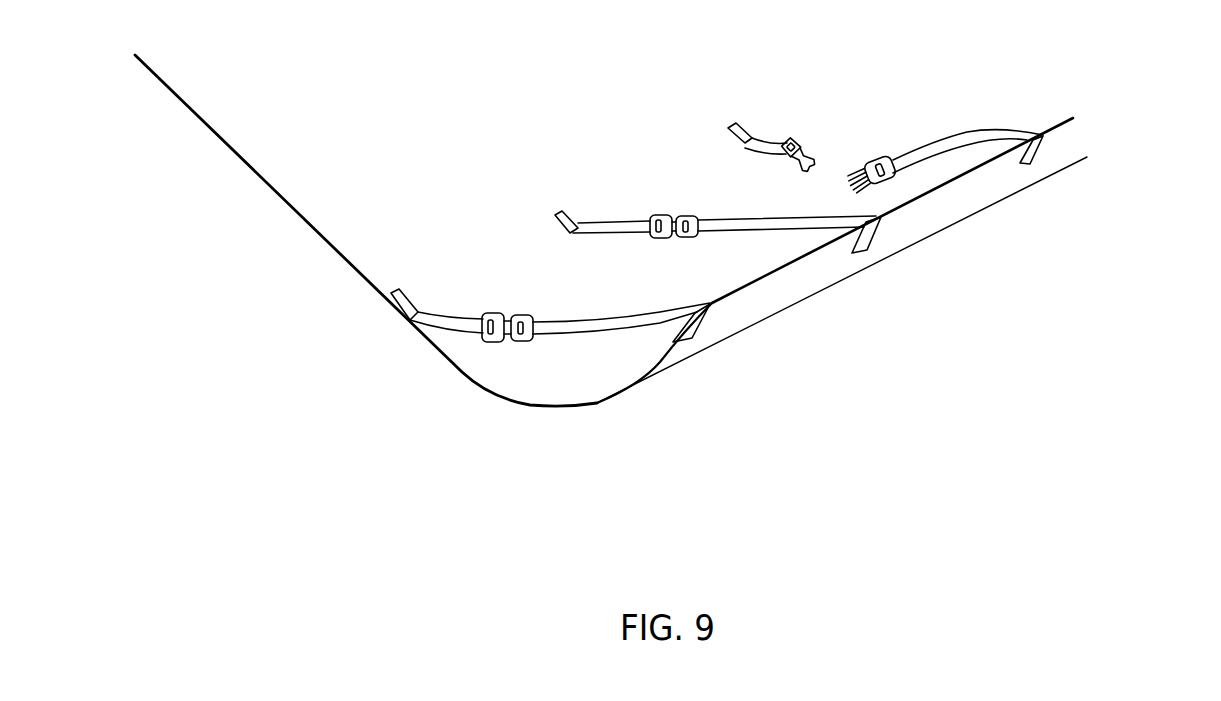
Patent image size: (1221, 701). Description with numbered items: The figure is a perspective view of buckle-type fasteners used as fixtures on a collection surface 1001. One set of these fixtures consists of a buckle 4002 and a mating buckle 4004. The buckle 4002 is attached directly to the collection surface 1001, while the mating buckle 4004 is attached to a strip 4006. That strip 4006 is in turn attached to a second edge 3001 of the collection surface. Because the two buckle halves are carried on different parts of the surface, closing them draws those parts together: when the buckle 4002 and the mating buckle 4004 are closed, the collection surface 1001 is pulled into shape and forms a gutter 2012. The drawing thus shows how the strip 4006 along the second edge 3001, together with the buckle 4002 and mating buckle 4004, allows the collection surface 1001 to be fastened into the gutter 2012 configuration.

The collection surface 1001 is at (602, 82).
The gutter 2012 is at (483, 418).
The second edge 3001 is at (843, 258).
The buckle 4002 is at (802, 118).
The mating buckle 4004 is at (898, 124).
The strip 4006 is at (1034, 115).